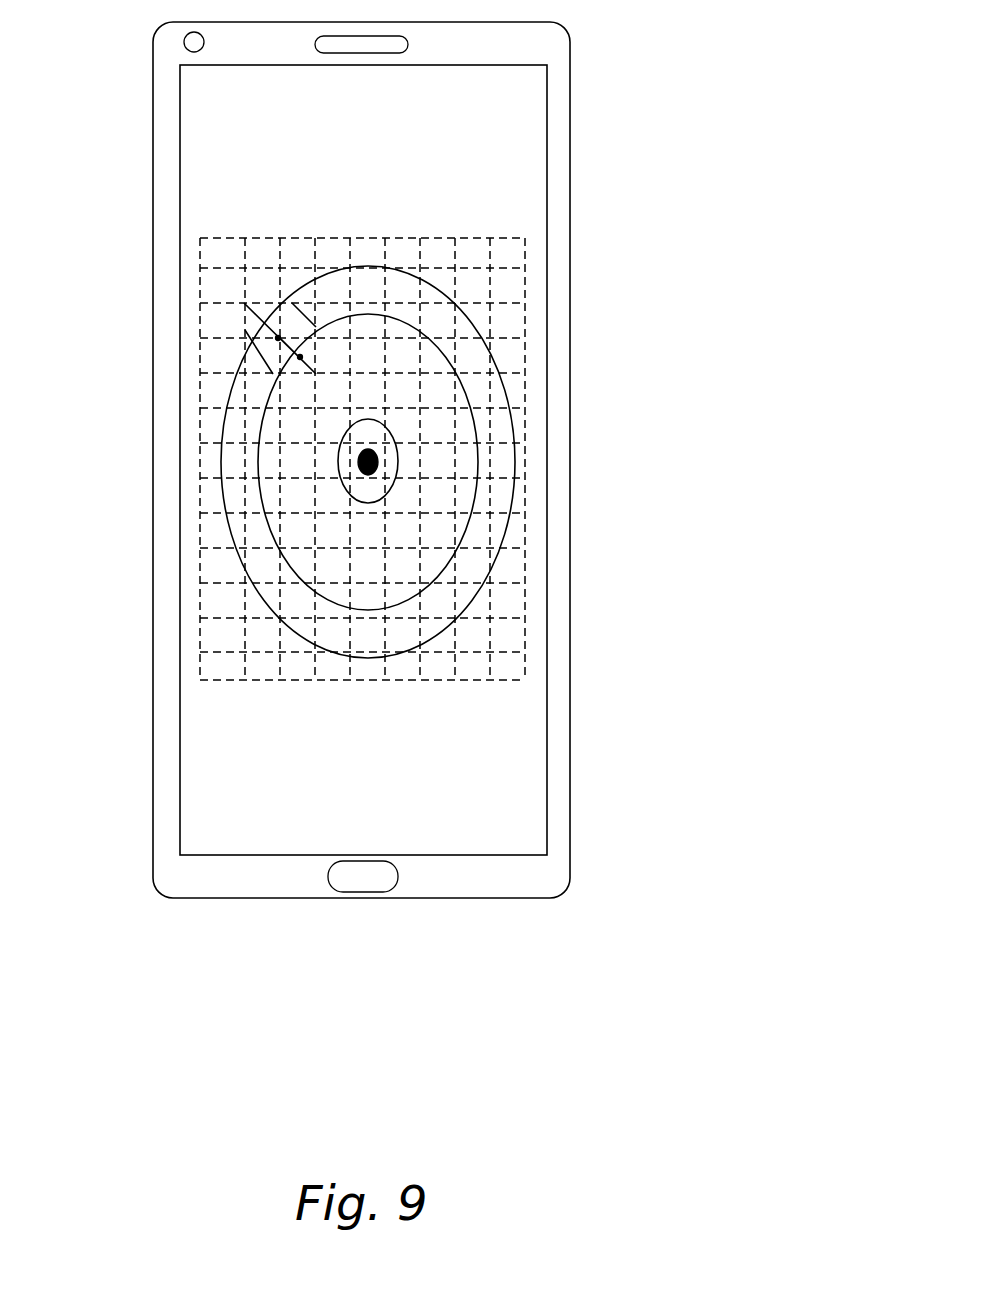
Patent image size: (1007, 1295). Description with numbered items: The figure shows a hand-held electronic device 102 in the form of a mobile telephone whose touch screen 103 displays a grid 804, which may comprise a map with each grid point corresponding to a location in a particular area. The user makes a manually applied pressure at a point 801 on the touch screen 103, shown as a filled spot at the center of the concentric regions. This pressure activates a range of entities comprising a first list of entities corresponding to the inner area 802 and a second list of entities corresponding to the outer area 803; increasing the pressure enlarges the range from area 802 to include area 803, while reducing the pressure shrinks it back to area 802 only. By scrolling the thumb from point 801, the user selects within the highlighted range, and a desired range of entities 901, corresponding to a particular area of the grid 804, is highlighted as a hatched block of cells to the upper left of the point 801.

The electronic device 102 is at (555, 67).
The touch screen 103 is at (522, 164).
The grid 804 is at (502, 320).
The area 803 is at (448, 600).
The area 802 is at (438, 532).
The point 801 is at (378, 461).
The desired range of entities 901 is at (280, 353).